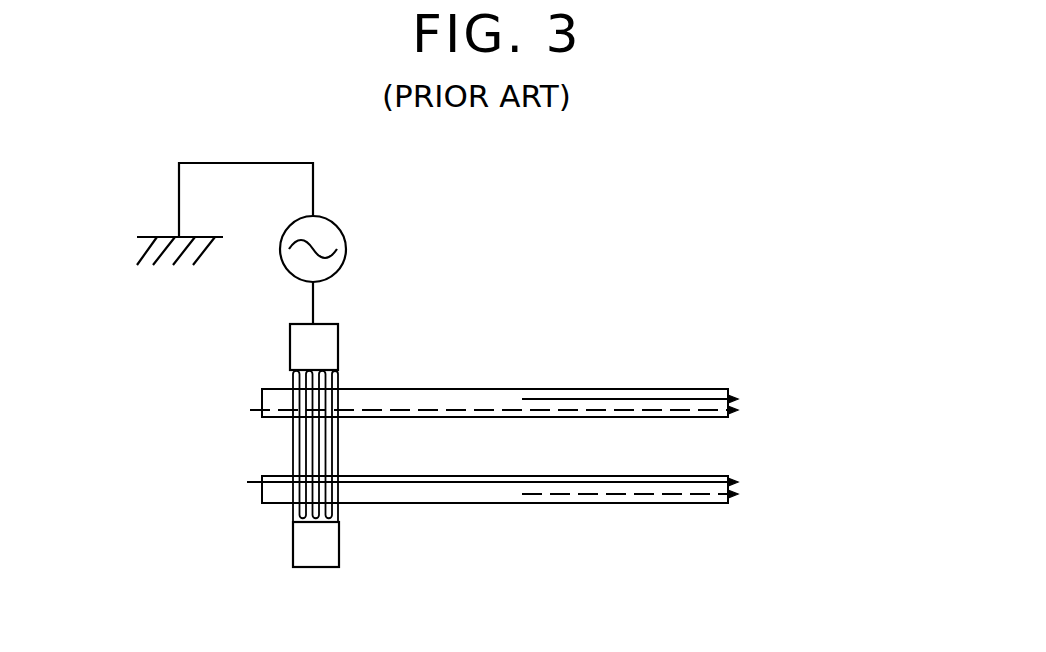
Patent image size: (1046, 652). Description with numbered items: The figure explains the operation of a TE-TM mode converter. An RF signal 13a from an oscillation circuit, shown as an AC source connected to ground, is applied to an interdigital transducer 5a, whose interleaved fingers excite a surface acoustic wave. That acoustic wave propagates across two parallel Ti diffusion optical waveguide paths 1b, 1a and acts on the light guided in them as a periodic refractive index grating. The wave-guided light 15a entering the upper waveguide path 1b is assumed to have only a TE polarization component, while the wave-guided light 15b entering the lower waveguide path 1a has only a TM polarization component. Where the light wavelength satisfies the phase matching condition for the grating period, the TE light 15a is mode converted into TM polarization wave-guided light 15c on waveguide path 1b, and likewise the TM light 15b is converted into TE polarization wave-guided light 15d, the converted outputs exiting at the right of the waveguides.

The RF signal 13a is at (346, 237).
The interdigital transducer 5a is at (290, 352).
The Ti diffusion optical waveguide path 1a is at (483, 504).
The Ti diffusion optical waveguide path 1b is at (483, 387).
The wave-guided light 15a is at (258, 407).
The wave-guided light 15b is at (257, 481).
The TM polarization wave-guided light 15c is at (717, 402).
The TE polarization wave-guided light 15d is at (707, 497).